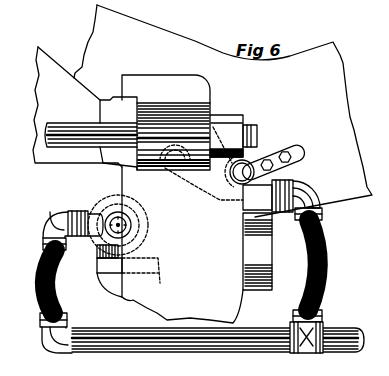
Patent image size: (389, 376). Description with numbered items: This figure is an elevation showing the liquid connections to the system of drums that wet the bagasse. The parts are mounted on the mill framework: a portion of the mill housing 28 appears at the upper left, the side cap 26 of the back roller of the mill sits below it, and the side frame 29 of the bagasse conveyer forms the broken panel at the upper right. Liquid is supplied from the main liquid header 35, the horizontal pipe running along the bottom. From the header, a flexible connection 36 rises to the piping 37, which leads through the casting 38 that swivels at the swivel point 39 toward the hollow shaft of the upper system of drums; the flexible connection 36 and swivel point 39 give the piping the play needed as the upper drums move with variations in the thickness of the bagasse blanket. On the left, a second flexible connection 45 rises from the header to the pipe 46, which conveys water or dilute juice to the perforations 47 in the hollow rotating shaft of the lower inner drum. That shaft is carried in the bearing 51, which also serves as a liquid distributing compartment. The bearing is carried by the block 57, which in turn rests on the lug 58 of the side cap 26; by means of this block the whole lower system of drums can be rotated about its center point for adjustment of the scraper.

The side cap 26 is at (184, 199).
The mill housing 28 is at (77, 107).
The side frame 29 is at (223, 111).
The main liquid header 35 is at (338, 350).
The flexible connection 36 is at (322, 262).
The piping 37 is at (315, 196).
The casting 38 is at (256, 200).
The swivel point 39 is at (244, 170).
The flexible connection 45 is at (63, 306).
The pipe 46 is at (57, 222).
The perforations 47 is at (125, 225).
The bearing 51 is at (90, 222).
The block 57 is at (102, 252).
The lug 58 is at (107, 268).